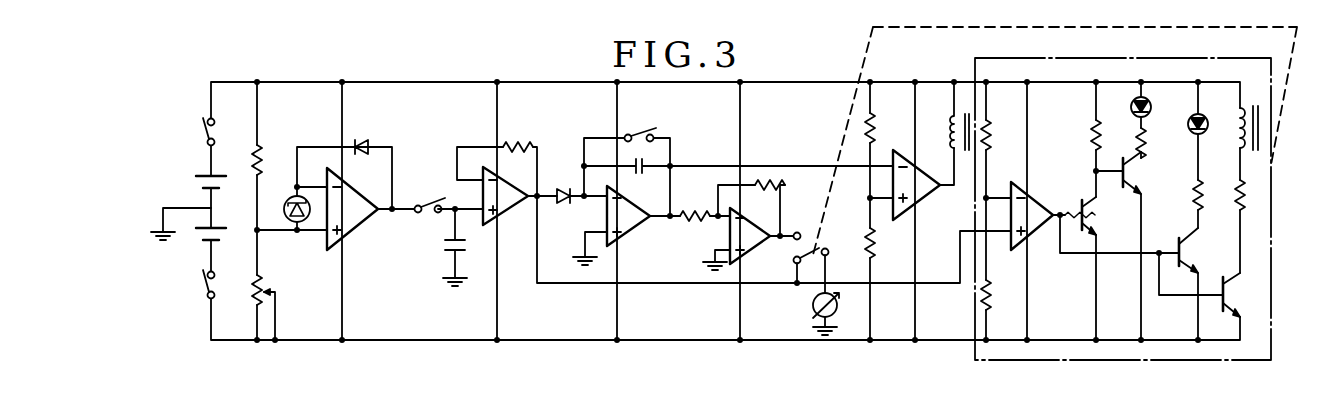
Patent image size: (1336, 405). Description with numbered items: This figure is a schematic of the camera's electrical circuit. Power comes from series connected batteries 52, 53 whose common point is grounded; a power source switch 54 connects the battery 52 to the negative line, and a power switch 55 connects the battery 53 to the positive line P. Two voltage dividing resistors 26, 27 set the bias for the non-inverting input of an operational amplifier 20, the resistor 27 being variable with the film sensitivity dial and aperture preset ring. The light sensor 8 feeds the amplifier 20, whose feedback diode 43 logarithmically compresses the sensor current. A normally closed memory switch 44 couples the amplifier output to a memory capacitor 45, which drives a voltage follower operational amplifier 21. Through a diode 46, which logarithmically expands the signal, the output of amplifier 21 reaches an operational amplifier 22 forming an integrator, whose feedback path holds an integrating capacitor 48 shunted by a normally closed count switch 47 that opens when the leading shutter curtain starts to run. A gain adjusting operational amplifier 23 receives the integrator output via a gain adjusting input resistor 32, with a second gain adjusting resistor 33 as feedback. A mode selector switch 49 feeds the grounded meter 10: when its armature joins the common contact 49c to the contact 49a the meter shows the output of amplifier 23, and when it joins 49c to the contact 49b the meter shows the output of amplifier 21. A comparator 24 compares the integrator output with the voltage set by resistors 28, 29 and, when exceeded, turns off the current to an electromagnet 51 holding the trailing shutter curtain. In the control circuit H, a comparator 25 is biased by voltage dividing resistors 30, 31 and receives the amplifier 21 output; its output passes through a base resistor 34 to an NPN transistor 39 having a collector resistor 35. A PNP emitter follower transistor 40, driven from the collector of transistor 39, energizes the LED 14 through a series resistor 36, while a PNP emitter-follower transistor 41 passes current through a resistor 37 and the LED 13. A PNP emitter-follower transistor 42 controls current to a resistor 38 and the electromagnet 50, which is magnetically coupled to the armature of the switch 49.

The sensor 8 is at (284, 213).
The meter 10 is at (812, 303).
The LED 13 is at (1205, 120).
The LED 14 is at (1152, 104).
The operational amplifier 20 is at (355, 239).
The operational amplifier 21 is at (512, 213).
The operational amplifier 22 is at (645, 234).
The gain adjusting operational amplifier 23 is at (748, 232).
The comparator 24 is at (926, 199).
The comparator 25 is at (1003, 249).
The voltage dividing resistor 26 is at (255, 151).
The variable voltage dividing resistor 27 is at (257, 300).
The resistor 28 is at (874, 124).
The resistor 29 is at (867, 248).
The voltage dividing resistor 30 is at (992, 134).
The voltage dividing resistor 31 is at (982, 297).
The gain adjusting input resistor 32 is at (695, 223).
The second gain adjusting resistor 33 is at (762, 180).
The base resistor 34 is at (1073, 212).
The collector resistor 35 is at (1092, 134).
The series resistor 36 is at (1148, 137).
The resistor 37 is at (1200, 194).
The resistor 38 is at (1238, 214).
The NPN transistor 39 is at (1090, 213).
The PNP emitter follower transistor 40 is at (1144, 170).
The PNP emitter-follower transistor 41 is at (1185, 262).
The PNP emitter-follower transistor 42 is at (1232, 293).
The diode 43 is at (363, 144).
The memory switch 44 is at (422, 205).
The memory capacitor 45 is at (445, 244).
The diode 46 is at (563, 190).
The count switch 47 is at (640, 134).
The integrating capacitor 48 is at (640, 173).
The mode selector switch 49 is at (816, 250).
The contact 49a is at (797, 233).
The contact 49b is at (793, 261).
The common contact 49c is at (827, 250).
The electromagnet 50 is at (1262, 129).
The electromagnet 51 is at (949, 134).
The battery 52 is at (202, 236).
The battery 53 is at (194, 182).
The power source switch 54 is at (204, 291).
The power switch 55 is at (205, 126).
The positive line P is at (405, 82).
The control circuit H is at (1084, 360).